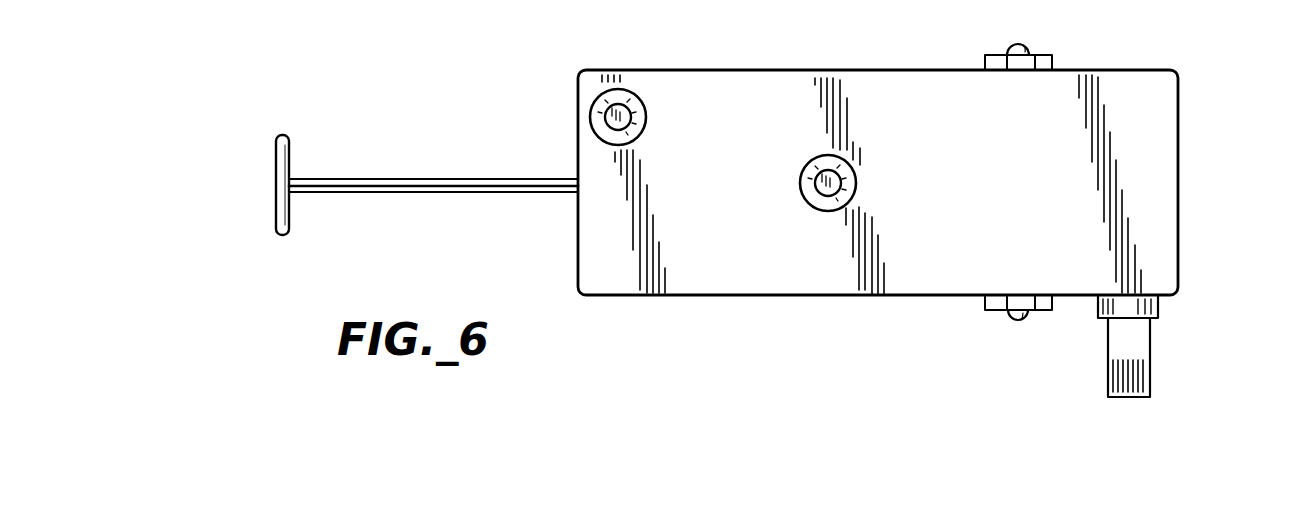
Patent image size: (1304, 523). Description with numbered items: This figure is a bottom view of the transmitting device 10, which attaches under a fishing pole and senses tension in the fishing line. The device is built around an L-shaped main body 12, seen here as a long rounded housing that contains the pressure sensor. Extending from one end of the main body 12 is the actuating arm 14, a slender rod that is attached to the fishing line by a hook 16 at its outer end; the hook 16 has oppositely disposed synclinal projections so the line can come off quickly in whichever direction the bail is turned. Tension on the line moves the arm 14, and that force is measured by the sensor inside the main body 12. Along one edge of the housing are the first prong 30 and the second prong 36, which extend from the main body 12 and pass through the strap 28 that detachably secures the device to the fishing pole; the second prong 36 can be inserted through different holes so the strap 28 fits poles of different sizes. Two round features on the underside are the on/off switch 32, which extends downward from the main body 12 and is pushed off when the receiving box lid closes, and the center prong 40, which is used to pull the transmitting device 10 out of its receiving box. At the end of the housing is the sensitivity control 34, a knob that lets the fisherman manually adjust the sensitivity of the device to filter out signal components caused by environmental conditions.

The transmitting device 10 is at (1208, 199).
The main body 12 is at (688, 296).
The actuating arm 14 is at (443, 178).
The hook 16 is at (289, 212).
The strap 28 is at (1055, 63).
The first prong 30 is at (1008, 52).
The on/off switch 32 is at (647, 117).
The sensitivity control 34 is at (1107, 330).
The second prong 36 is at (1017, 323).
The center prong 40 is at (800, 181).